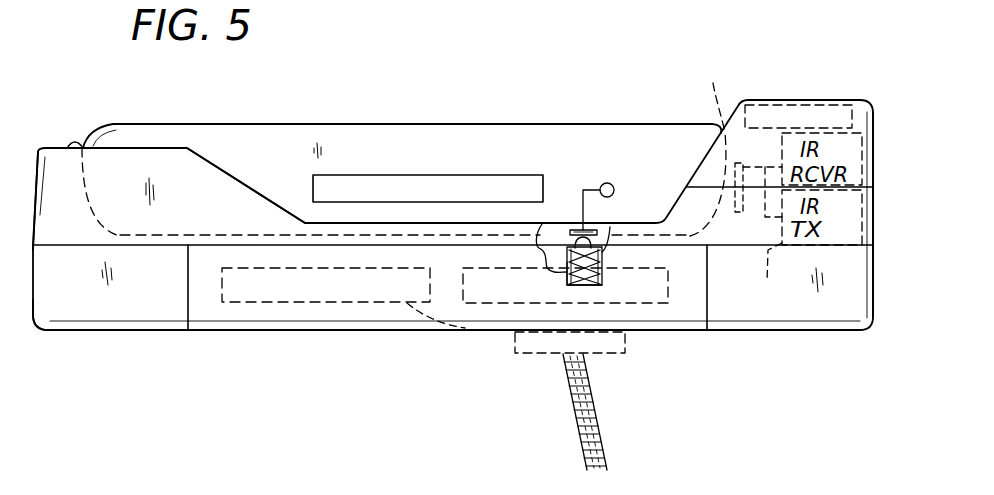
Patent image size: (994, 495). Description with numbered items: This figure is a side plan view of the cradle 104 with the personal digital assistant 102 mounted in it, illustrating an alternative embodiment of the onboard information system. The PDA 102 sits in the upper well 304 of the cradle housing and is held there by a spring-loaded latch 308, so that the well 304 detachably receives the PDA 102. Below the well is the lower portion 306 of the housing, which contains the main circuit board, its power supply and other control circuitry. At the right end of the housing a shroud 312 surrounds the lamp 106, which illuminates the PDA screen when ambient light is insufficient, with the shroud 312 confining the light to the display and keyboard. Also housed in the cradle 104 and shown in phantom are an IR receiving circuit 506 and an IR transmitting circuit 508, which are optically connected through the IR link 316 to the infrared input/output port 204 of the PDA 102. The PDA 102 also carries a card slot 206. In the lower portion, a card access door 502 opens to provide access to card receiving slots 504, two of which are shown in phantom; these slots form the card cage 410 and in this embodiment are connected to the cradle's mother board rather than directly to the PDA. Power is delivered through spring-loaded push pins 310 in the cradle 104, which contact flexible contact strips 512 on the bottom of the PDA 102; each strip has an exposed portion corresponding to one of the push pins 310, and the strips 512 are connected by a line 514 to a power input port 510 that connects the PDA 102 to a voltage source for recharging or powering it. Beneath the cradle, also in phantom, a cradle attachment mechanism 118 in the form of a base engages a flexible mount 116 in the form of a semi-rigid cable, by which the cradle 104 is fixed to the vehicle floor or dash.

The personal digital assistant 102 is at (402, 100).
The cradle 104 is at (153, 363).
The lamp 106 is at (798, 85).
The universal flexible mount 116 is at (629, 412).
The cradle attachment mechanism 118 is at (594, 373).
The infrared port 204 is at (690, 184).
The card slot 206 is at (428, 167).
The upper well 304 is at (263, 177).
The lower portion 306 is at (78, 352).
The spring-loaded latch 308 is at (68, 161).
The push pins 310 is at (538, 283).
The shroud 312 is at (804, 57).
The IR link 316 is at (716, 92).
The card cage 410 is at (690, 363).
The card access door 502 is at (326, 338).
The card receiving slots 504 is at (537, 329).
The IR receiving circuit 506 is at (864, 184).
The IR transmitting circuit 508 is at (773, 278).
The power input port 510 is at (624, 153).
The flexible contact strips 512 is at (606, 224).
The line 514 is at (573, 210).